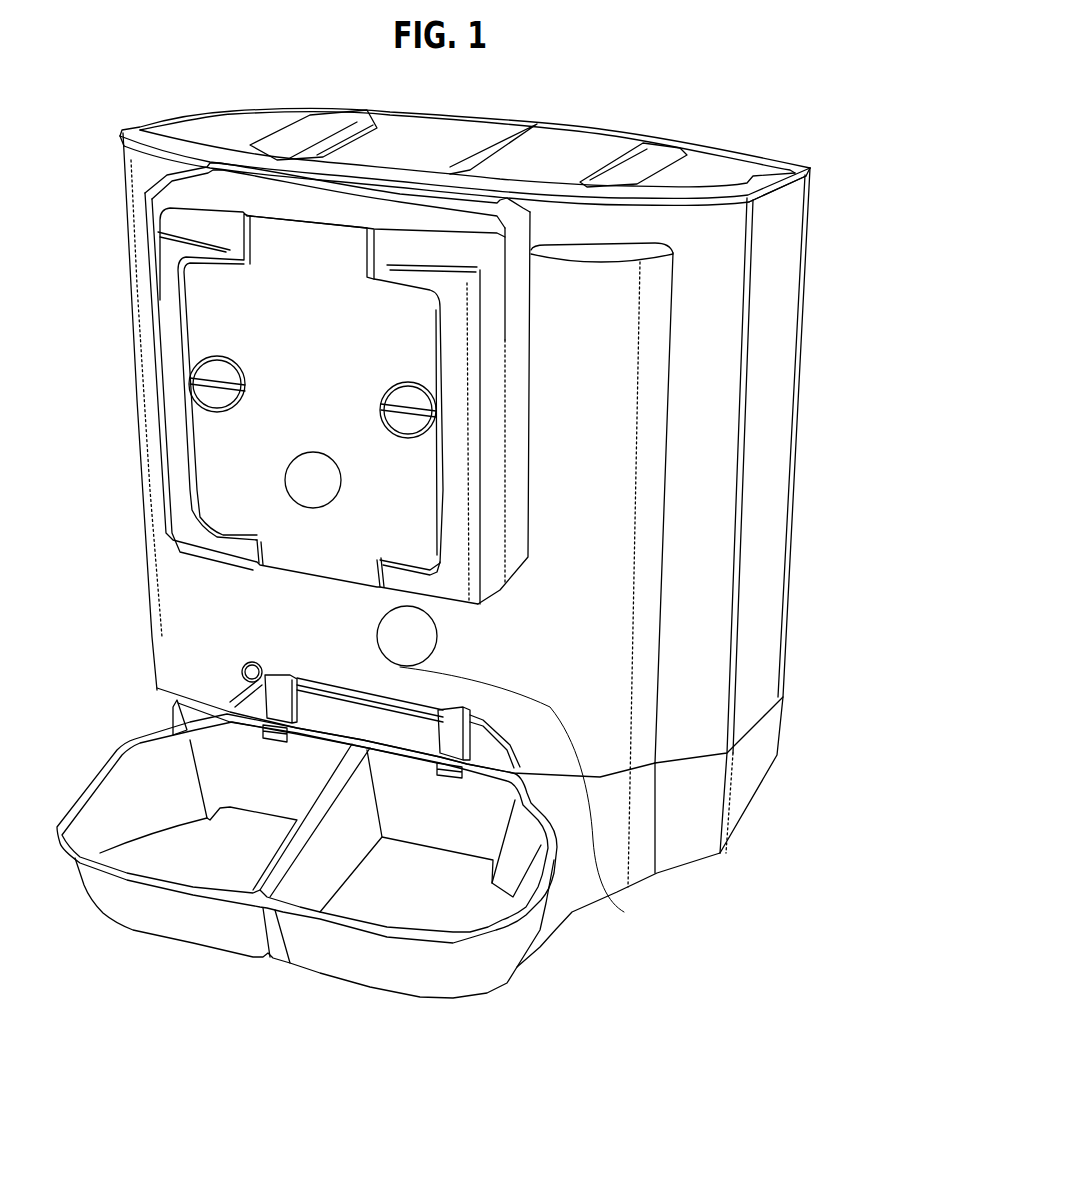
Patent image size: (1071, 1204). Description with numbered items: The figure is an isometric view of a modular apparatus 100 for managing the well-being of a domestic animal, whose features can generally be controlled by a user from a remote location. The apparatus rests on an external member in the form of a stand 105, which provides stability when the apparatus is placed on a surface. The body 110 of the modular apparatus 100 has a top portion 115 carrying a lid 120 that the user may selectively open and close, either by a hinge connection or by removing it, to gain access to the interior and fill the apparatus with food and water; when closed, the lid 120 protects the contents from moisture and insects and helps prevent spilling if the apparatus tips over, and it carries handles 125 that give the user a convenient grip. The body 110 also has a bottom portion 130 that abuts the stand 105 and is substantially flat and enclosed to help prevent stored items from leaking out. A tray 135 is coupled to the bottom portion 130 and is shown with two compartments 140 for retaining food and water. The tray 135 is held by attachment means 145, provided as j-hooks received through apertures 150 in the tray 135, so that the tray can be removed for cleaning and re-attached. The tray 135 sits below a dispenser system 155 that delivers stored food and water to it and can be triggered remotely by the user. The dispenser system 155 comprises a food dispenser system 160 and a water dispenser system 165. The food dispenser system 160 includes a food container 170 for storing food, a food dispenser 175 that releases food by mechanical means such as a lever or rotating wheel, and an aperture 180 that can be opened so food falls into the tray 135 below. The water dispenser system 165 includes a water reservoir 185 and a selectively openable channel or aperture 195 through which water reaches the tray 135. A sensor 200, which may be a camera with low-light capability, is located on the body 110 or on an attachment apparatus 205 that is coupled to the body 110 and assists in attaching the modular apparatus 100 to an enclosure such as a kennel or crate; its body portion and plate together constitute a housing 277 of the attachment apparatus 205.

The modular apparatus 100 is at (100, 110).
The stand 105 is at (752, 822).
The body 110 is at (97, 331).
The top portion 115 is at (812, 188).
The lid 120 is at (652, 103).
The handles 125 is at (320, 124).
The bottom portion 130 is at (781, 689).
The tray 135 is at (266, 968).
The compartments 140 is at (173, 857).
The attachment means 145 is at (454, 731).
The apertures 150 is at (550, 840).
The dispenser system 155 is at (132, 548).
The food dispenser system 160 is at (795, 585).
The water dispenser system 165 is at (132, 640).
The food container 170 is at (693, 460).
The food dispenser 175 is at (447, 622).
The aperture 180 is at (246, 650).
The water reservoir 185 is at (137, 465).
The channel or aperture 195 is at (258, 678).
The sensor 200 is at (307, 478).
The attachment apparatus 205 is at (422, 318).
The housing 277 is at (534, 382).